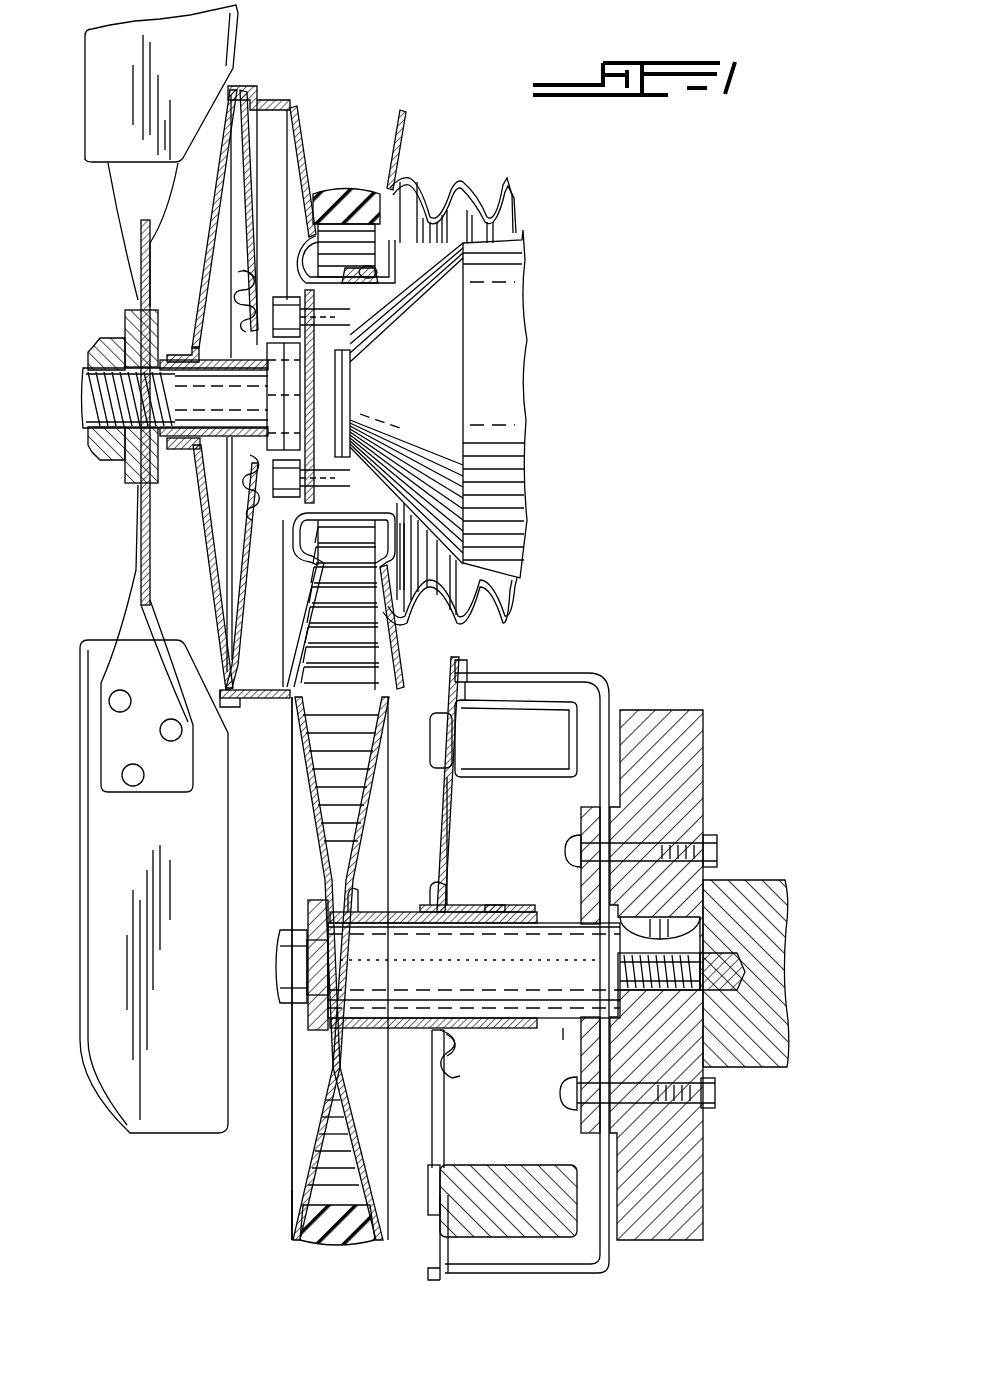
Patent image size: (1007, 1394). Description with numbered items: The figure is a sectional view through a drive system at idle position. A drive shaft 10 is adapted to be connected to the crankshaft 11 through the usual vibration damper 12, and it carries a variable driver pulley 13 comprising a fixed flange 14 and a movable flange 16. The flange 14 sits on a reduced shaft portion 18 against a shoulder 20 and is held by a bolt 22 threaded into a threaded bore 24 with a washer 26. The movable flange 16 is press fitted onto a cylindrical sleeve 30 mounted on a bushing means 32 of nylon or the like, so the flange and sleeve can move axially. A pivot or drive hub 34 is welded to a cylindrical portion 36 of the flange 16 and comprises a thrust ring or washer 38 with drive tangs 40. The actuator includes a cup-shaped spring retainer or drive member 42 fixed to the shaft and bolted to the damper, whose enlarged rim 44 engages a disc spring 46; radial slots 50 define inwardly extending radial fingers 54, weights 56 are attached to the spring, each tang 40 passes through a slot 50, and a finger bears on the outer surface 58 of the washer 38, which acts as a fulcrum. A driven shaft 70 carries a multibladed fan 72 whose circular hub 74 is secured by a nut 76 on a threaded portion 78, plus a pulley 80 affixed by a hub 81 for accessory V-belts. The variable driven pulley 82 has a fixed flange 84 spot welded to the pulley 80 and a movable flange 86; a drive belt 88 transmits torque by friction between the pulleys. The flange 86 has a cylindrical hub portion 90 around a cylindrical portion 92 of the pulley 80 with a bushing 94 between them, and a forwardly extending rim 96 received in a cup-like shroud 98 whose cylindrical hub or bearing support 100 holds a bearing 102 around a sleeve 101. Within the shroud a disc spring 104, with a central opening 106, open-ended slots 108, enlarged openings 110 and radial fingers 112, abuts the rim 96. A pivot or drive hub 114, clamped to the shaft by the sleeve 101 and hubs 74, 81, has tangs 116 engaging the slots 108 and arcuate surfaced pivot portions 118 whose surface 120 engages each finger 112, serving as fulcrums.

The drive shaft 10 is at (564, 1030).
The crankshaft 11 is at (772, 880).
The vibration damper 12 is at (700, 746).
The variable driver pulley 13 is at (289, 1190).
The fixed flange 14 is at (291, 860).
The movable flange 16 is at (383, 765).
The reduced shaft portion 18 is at (286, 968).
The shoulder 20 is at (318, 960).
The bolt 22 is at (288, 1000).
The threaded bore 24 is at (620, 970).
The washer 26 is at (310, 1015).
The cylindrical sleeve 30 is at (510, 905).
The bushing means 32 is at (357, 1022).
The pivot or drive hub 34 is at (430, 895).
The cylindrical portion 36 is at (352, 900).
The thrust ring or washer 38 is at (447, 905).
The drive tangs 40 is at (455, 1079).
The spring retainer or drive member 42 is at (592, 673).
The enlarged rim 44 is at (456, 660).
The disc spring 46 is at (452, 692).
The radial slots 50 is at (445, 1115).
The radial fingers 54 is at (450, 812).
The weights 56 is at (510, 751).
The outer surface 58 is at (449, 1045).
The driven shaft 70 is at (221, 398).
The multibladed fan 72 is at (201, 85).
The circular hub 74 is at (138, 308).
The nut 76 is at (100, 345).
The threaded portion 78 is at (92, 385).
The pulley 80 is at (505, 235).
The hub 81 is at (283, 392).
The variable driven pulley 82 is at (416, 138).
The fixed flange 84 is at (405, 162).
The movable flange 86 is at (302, 130).
The drive belt 88 is at (352, 200).
The cylindrical hub portion 90 is at (318, 257).
The cylindrical portion 92 is at (346, 286).
The bushing 94 is at (390, 293).
The forwardly extending rim 96 is at (266, 98).
The cup-like shroud 98 is at (214, 213).
The cylindrical hub or bearing support 100 is at (183, 340).
The sleeve 101 is at (196, 483).
The bearing 102 is at (215, 348).
The disc spring 104 is at (249, 112).
The central opening 106 is at (288, 293).
The open-ended slots 108 is at (240, 588).
The enlarged openings 110 is at (236, 630).
The radial fingers 112 is at (253, 228).
The pivot or drive hub 114 is at (240, 278).
The tangs 116 is at (257, 522).
The arcuate surfaced pivot portions 118 is at (220, 448).
The surface 120 is at (247, 484).